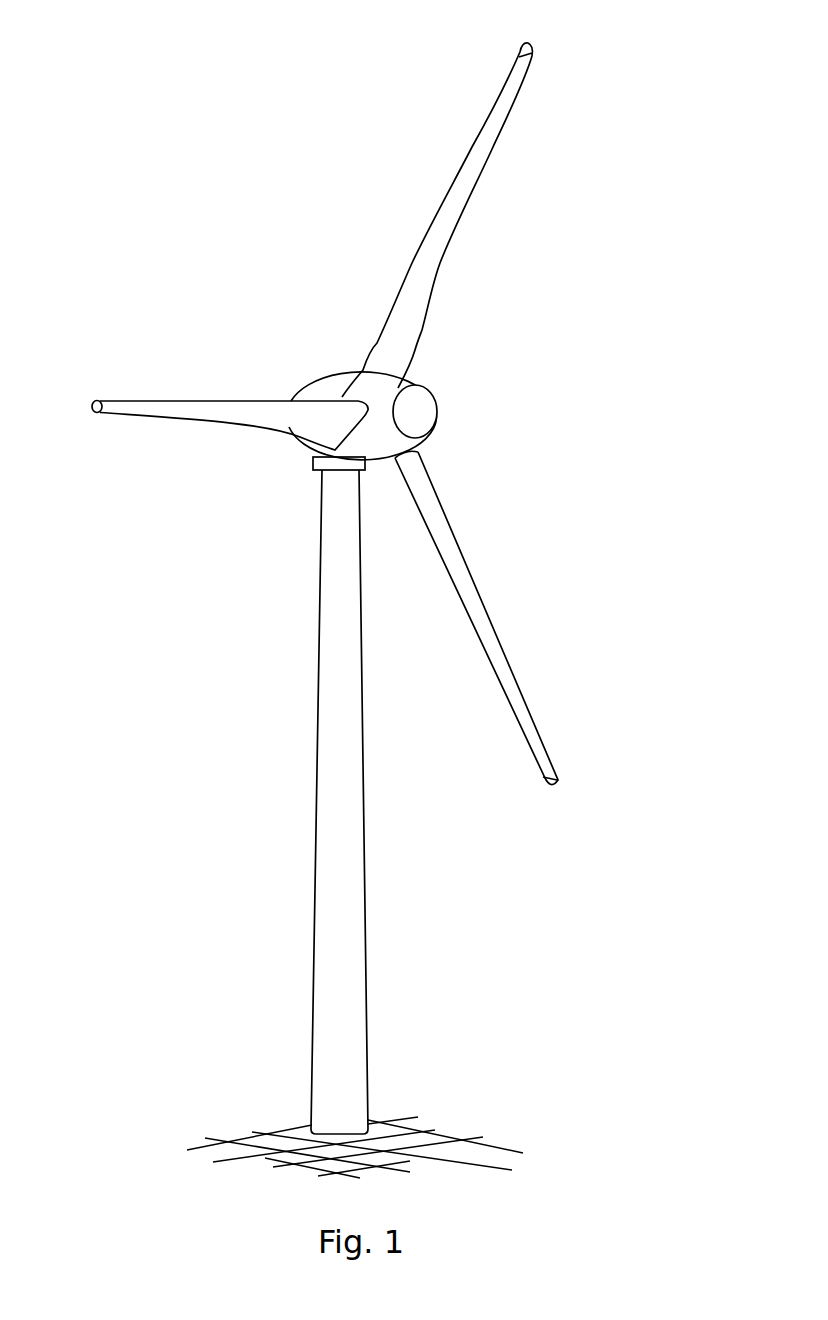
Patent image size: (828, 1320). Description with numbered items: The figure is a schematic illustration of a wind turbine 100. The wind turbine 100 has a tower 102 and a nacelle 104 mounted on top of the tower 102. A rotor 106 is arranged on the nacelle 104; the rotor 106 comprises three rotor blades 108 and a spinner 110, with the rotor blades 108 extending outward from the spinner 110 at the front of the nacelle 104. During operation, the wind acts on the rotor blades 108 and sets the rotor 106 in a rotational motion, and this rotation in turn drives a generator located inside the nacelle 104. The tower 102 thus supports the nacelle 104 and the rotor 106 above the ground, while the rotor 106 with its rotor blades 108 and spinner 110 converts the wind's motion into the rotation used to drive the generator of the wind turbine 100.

The wind turbine 100 is at (265, 548).
The tower 102 is at (345, 903).
The nacelle 104 is at (331, 387).
The rotor 106 is at (512, 330).
The rotor blade 108 is at (480, 168).
The spinner 110 is at (418, 412).